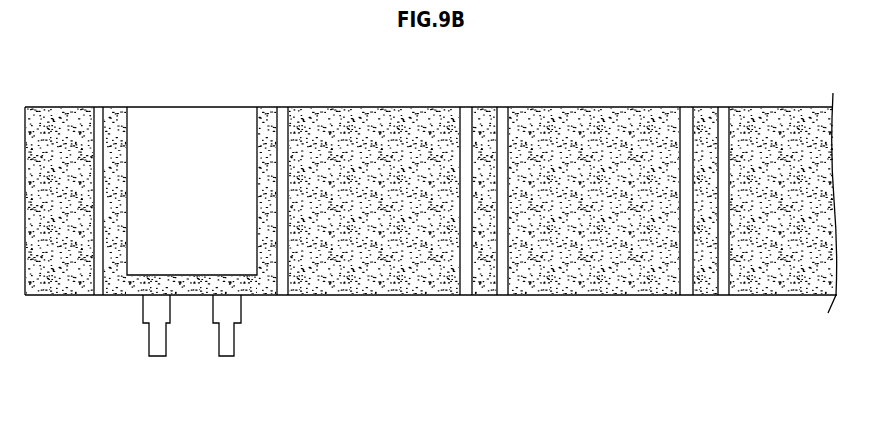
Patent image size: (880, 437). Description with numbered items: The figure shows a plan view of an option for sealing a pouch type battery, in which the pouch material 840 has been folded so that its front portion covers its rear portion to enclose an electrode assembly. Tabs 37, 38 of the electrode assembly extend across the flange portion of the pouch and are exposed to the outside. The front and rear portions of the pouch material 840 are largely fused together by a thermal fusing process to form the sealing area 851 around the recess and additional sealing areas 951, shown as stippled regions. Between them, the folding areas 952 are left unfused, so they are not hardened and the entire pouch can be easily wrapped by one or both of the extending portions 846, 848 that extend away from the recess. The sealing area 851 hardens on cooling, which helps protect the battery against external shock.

The extending portion 846 is at (73, 113).
The pouch material 840 is at (188, 118).
The sealing area 851 is at (267, 113).
The extending portion 848 is at (785, 110).
The additional sealing area 951 is at (49, 292).
The folding area 952 is at (99, 292).
The tab 38 is at (157, 350).
The tab 37 is at (229, 350).